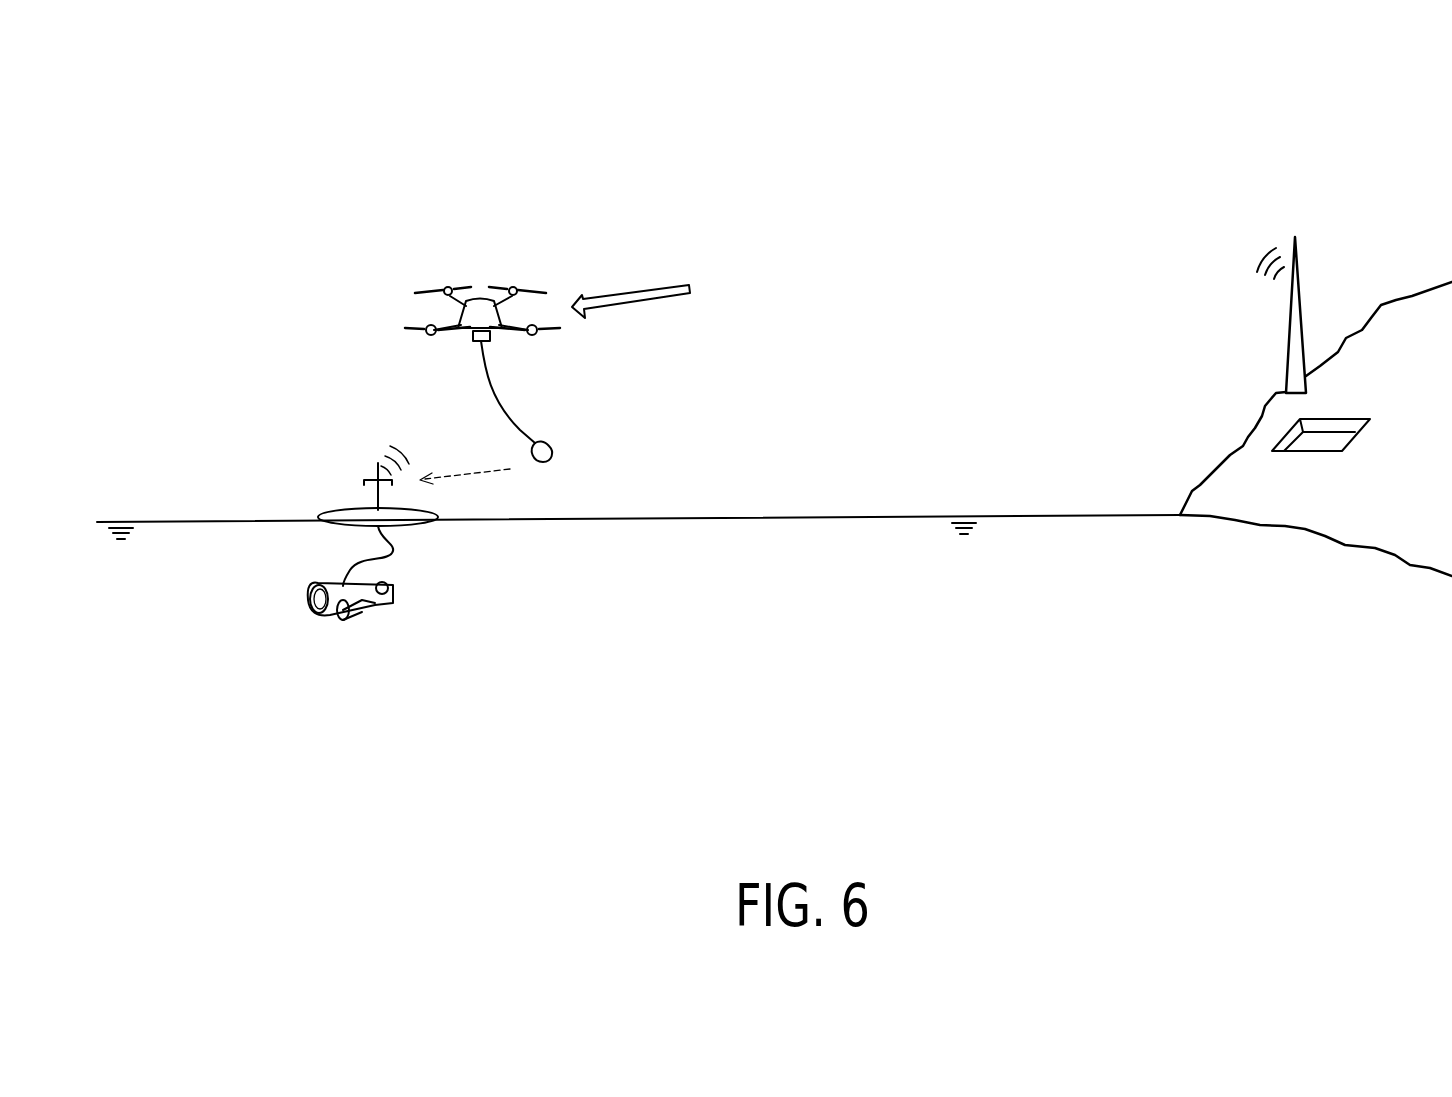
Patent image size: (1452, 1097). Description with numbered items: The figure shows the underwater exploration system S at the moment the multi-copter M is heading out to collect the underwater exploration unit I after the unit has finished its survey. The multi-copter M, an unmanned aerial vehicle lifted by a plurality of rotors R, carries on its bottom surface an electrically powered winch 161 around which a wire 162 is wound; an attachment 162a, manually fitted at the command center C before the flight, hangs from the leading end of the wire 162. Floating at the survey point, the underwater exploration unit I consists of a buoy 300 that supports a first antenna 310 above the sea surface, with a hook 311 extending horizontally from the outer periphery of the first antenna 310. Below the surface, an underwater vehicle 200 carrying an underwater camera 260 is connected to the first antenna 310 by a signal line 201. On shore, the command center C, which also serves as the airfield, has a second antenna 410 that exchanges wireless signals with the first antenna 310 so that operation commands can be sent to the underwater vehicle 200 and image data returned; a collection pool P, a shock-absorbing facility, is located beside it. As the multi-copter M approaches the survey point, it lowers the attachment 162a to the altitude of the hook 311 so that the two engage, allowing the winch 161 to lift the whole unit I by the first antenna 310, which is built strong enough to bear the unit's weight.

The underwater exploration system S is at (210, 105).
The underwater exploration unit I is at (180, 395).
The rotors R is at (410, 327).
The multi-copter M is at (461, 295).
The command center C is at (1270, 292).
The collection pool P is at (1321, 450).
The winch 161 is at (477, 342).
The wire 162 is at (550, 416).
The attachment 162a is at (547, 452).
The underwater vehicle 200 is at (355, 588).
The signal line 201 is at (397, 553).
The underwater camera 260 is at (318, 608).
The buoy 300 is at (312, 512).
The first antenna 310 is at (296, 433).
The hook 311 is at (373, 472).
The second antenna 410 is at (1300, 295).